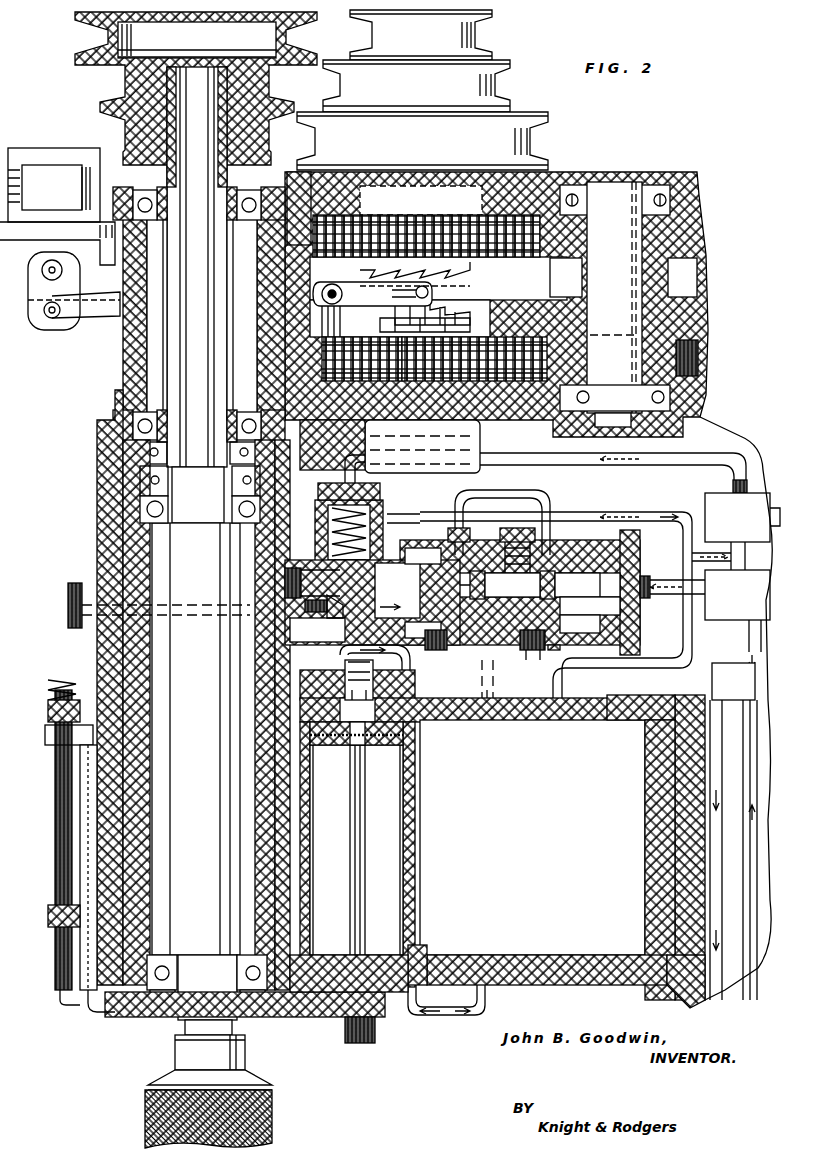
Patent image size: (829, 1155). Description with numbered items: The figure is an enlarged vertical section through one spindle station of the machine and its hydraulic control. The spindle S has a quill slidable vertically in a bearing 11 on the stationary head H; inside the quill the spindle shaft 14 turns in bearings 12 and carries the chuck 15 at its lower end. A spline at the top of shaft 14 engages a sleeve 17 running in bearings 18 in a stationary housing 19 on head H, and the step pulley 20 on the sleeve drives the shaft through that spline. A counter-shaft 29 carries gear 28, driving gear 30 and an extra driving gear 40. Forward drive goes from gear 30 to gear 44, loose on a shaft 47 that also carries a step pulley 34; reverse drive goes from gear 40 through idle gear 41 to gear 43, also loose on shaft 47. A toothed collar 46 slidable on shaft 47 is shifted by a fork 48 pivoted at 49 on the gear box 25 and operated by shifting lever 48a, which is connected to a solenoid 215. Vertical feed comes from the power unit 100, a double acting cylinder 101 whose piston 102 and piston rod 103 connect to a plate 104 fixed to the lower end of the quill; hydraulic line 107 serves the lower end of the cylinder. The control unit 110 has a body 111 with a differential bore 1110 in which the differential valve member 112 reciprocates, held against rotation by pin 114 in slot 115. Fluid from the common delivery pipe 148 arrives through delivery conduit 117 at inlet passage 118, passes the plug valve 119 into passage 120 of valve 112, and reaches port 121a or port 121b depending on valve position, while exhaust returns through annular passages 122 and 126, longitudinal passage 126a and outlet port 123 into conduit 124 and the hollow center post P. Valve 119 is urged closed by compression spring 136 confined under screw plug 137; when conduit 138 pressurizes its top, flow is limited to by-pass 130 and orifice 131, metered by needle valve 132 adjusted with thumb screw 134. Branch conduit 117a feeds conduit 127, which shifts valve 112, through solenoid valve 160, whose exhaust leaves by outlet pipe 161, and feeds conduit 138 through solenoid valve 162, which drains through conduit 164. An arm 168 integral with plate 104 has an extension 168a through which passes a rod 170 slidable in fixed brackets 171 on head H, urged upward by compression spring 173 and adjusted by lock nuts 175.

The pulley 20 is at (97, 34).
The spindle shaft 14 is at (205, 72).
The step pulley 34 is at (482, 92).
The shaft 47 is at (455, 180).
The gear 44 is at (488, 230).
The top plate 25 is at (709, 181).
The gear 30 is at (700, 232).
The solenoid 215 is at (44, 165).
The bearings 18 is at (145, 187).
The pivot 49 is at (332, 288).
The fork 48 is at (376, 290).
The collar 46 is at (455, 290).
The counter-shaft 29 is at (627, 309).
The gear 28 is at (708, 315).
The driving gear 40 is at (692, 358).
The shifting lever 48a is at (85, 327).
The sleeve 17 is at (160, 348).
The stationary housing 19 is at (126, 370).
The gear 43 is at (372, 380).
The idle gear 41 is at (500, 370).
The conduit 164 is at (765, 450).
The head H is at (84, 512).
The screw plug 137 is at (345, 482).
The delivery conduit 117 is at (415, 532).
The conduit 124 is at (506, 505).
The pin 114 is at (552, 514).
The hydraulic control unit 110 is at (588, 534).
The conduit 138 is at (638, 464).
The solenoid valve 162 is at (742, 517).
The compression spring 136 is at (316, 546).
The outlet port 123 is at (423, 556).
The longitudinal passage 126a is at (495, 550).
The passage 1110 is at (598, 524).
The branch conduit 117a is at (700, 553).
The bearings 12 is at (135, 534).
The inlet passage 118 is at (312, 583).
The valve 119 is at (397, 590).
The passage 120 is at (512, 585).
The movable valve member 112 is at (577, 585).
The slot 115 is at (590, 606).
The solenoid valve 160 is at (737, 595).
The thumb screw 134 is at (68, 609).
The by-pass 130 is at (317, 621).
The orifice 131 is at (339, 618).
The passage 122 is at (423, 630).
The annular passage 126 is at (586, 626).
The conduit 127 is at (656, 602).
The body member 111 is at (562, 650).
The metering valve 132 is at (372, 612).
The port 121b is at (393, 665).
The port 121a is at (540, 648).
The outlet pipe 161 is at (749, 637).
The compression spring 173 is at (46, 692).
The hydraulic line 107 is at (484, 684).
The fixed brackets 171 is at (48, 714).
The extension 168a is at (46, 740).
The piston 102 is at (330, 748).
The double acting cylinder 101 is at (133, 764).
The rod 170 is at (56, 807).
The piston rod 103 is at (358, 808).
The power unit 100 is at (424, 840).
The bearing 11 is at (118, 824).
The spindle S is at (160, 871).
The post P is at (680, 844).
The common delivery pipe 148 is at (730, 882).
The lock nuts 175 is at (48, 916).
The arm 168 is at (66, 1002).
The plate 104 is at (318, 1017).
The chuck 15 is at (215, 1119).